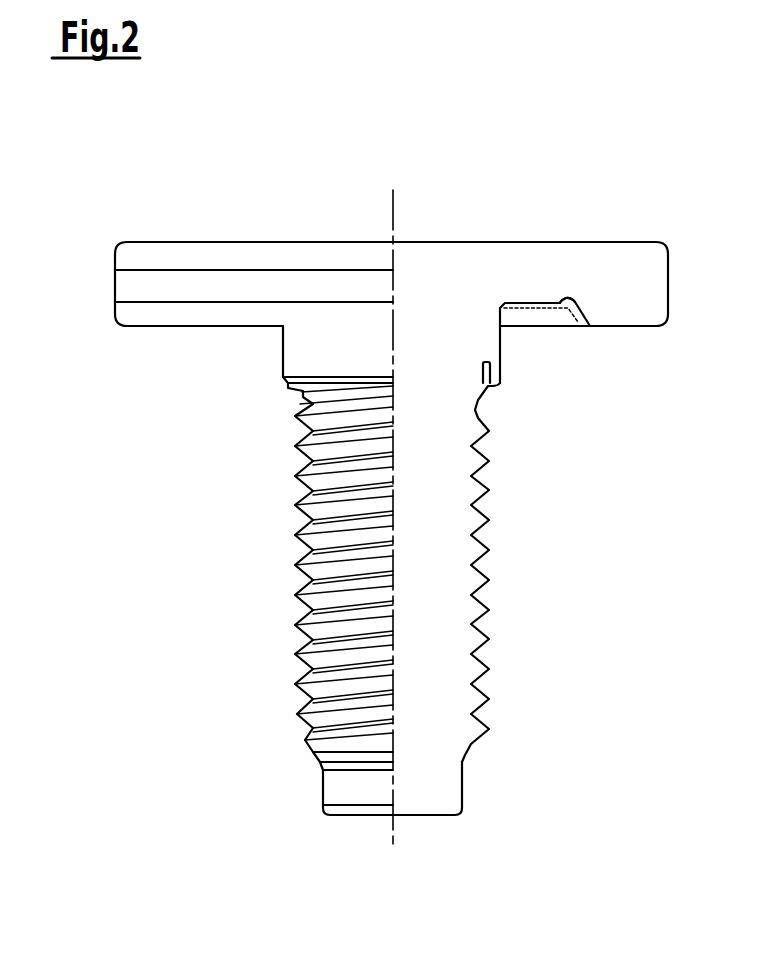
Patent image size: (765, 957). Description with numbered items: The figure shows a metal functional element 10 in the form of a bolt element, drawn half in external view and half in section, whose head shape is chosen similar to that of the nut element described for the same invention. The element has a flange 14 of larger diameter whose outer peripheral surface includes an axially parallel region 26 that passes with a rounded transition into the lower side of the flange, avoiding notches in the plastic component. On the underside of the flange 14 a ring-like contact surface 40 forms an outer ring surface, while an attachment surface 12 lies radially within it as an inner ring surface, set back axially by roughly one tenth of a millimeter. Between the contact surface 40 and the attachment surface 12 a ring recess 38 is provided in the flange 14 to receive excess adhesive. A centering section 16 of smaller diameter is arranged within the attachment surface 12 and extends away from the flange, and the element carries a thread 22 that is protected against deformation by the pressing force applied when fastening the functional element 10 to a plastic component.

The functional element 10 is at (467, 207).
The flange 14 is at (127, 260).
The axially parallel region 26 is at (114, 287).
The contact surface 40 is at (152, 333).
The recess 38 is at (567, 297).
The attachment surface 12 is at (549, 320).
The centering section 16 is at (498, 367).
The thread 22 is at (490, 549).